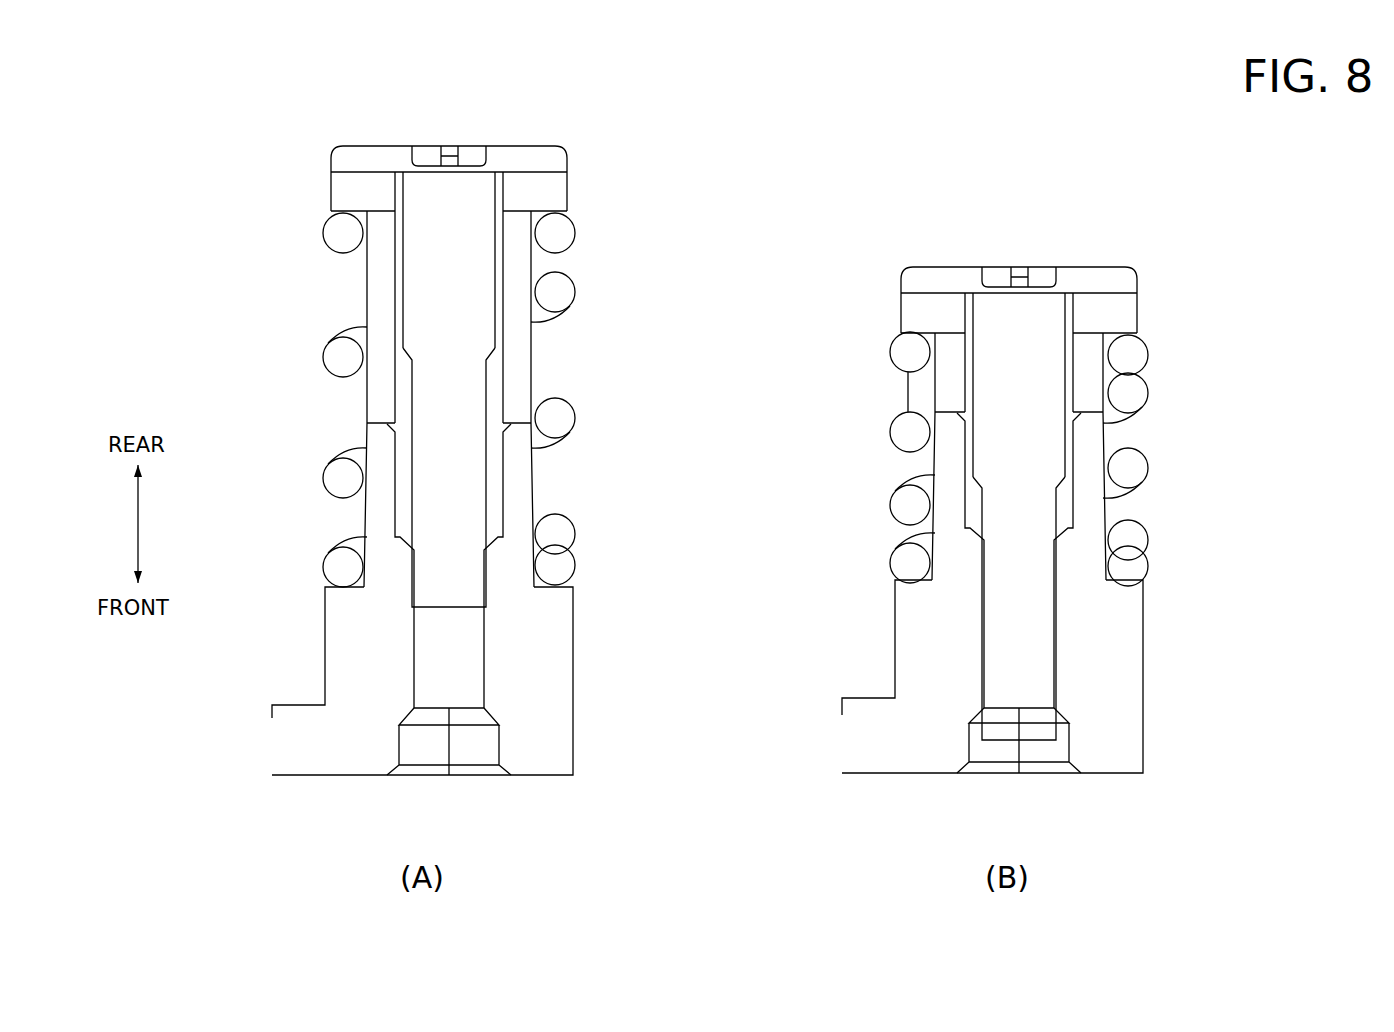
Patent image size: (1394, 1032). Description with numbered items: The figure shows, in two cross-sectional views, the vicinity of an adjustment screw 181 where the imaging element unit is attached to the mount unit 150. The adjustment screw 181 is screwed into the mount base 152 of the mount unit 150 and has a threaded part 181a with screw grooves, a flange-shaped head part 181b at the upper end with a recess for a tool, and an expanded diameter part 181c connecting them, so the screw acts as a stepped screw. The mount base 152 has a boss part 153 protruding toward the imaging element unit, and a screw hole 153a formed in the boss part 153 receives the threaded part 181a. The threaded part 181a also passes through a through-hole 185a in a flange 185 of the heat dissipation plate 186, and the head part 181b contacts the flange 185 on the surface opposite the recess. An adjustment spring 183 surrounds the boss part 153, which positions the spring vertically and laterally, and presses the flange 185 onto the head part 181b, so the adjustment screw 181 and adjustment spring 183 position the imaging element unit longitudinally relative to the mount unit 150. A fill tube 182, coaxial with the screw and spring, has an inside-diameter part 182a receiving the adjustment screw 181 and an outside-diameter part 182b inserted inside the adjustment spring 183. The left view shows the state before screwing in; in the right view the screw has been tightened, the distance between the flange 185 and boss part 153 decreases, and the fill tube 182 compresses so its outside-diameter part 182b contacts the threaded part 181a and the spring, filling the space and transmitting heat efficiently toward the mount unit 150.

The mount unit 150 is at (288, 786).
The mount base 152 is at (540, 723).
The boss part 153 is at (533, 483).
The screw hole 153a is at (483, 638).
The adjustment screw 181 is at (355, 133).
The threaded part 181a is at (449, 560).
The head part 181b is at (545, 139).
The expanded diameter part 181c is at (482, 288).
The fill tube 182 is at (387, 287).
The inside-diameter part 182a is at (393, 388).
The outside-diameter part 182b is at (366, 307).
The adjustment spring 183 is at (576, 289).
The flange 185 is at (556, 195).
The through-hole 185a is at (505, 183).
The heat dissipation plate 186 is at (313, 185).